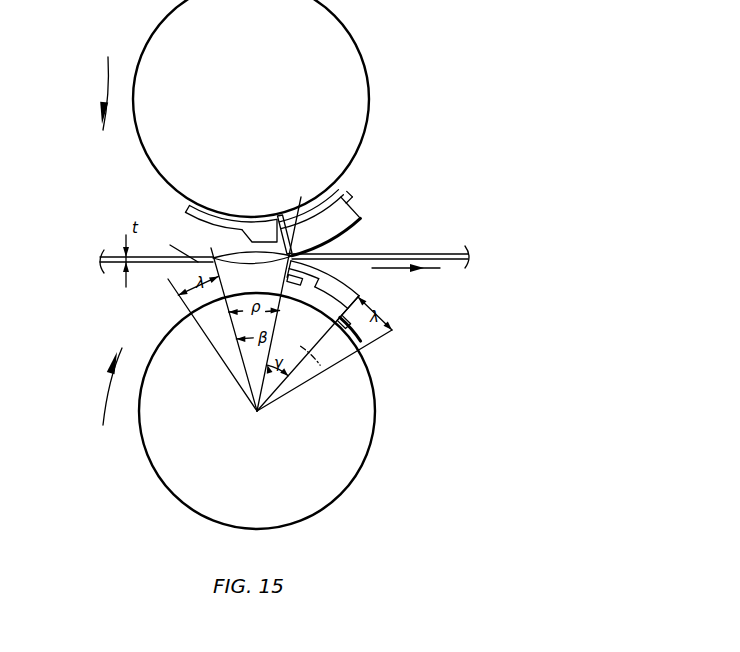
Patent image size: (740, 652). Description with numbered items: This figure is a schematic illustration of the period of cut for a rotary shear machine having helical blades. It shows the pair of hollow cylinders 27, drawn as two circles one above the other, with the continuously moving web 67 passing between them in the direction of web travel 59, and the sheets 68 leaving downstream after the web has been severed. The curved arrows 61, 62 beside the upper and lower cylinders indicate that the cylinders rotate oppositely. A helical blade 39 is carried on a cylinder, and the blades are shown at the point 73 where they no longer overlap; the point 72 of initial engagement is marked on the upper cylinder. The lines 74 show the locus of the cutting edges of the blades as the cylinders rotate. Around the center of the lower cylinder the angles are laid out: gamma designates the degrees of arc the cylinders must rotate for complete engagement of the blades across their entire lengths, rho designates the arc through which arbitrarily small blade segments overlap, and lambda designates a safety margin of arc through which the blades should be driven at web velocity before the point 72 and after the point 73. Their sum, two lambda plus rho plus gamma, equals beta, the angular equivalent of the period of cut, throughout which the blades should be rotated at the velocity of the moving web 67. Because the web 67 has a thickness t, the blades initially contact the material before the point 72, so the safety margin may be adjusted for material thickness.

The pairs of hollow cylinders 27 is at (369, 94).
The helical blade 39 is at (355, 213).
The direction of web travel 59 is at (426, 270).
The upper roll rotation direction 61 is at (103, 92).
The lower roll rotation direction 62 is at (106, 397).
The web 67 is at (100, 260).
The sheets 68 is at (424, 254).
The point of initial engagement 72 is at (213, 258).
The point where the blades no longer overlap 73 is at (292, 256).
The lines showing the locus of the cutting edges 74 is at (196, 257).